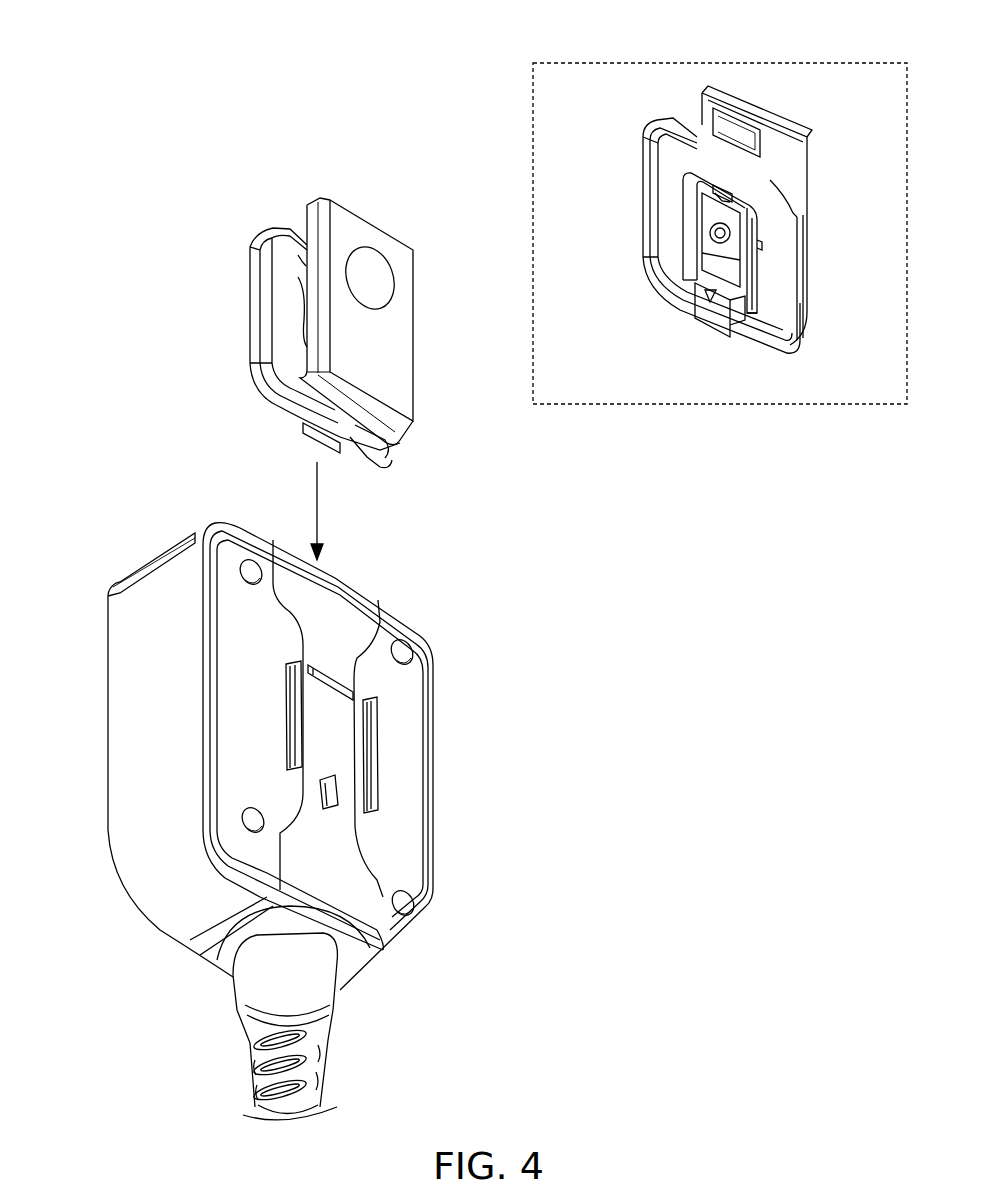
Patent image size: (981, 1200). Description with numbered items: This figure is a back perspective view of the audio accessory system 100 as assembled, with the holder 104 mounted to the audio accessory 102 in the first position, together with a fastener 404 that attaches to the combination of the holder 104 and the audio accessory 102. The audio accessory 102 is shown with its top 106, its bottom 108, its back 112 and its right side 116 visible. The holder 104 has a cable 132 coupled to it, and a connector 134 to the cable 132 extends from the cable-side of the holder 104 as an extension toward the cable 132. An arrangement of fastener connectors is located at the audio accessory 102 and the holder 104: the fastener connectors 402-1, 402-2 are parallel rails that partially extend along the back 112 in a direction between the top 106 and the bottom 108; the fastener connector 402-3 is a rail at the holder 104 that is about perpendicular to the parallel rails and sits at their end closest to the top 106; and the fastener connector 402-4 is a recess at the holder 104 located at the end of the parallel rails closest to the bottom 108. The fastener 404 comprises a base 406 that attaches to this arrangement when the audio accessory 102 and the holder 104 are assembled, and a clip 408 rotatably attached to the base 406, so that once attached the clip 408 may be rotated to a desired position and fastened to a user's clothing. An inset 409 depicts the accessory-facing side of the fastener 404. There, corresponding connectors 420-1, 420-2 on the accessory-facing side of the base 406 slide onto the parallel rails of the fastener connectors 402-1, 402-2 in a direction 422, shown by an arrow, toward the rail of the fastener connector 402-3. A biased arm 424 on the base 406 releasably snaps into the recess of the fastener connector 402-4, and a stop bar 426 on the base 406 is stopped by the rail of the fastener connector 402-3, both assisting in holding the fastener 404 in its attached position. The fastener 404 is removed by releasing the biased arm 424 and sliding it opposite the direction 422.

The audio accessory system 100 is at (150, 213).
The audio accessory 102 is at (428, 631).
The holder 104 is at (351, 988).
The top 106 is at (226, 520).
The bottom 108 is at (190, 935).
The back 112 is at (410, 828).
The right side 116 is at (118, 668).
The cable 132 is at (255, 1090).
The connector 134 is at (243, 1013).
The fastener connector 402-1 is at (287, 726).
The fastener connector 402-2 is at (373, 758).
The fastener connector 402-3 is at (375, 700).
The fastener connector 402-4 is at (320, 790).
The fastener 404 is at (250, 225).
The base 406 is at (258, 313).
The clip 408 is at (414, 323).
The inset 409 is at (533, 134).
The corresponding connector 420-1 is at (750, 283).
The corresponding connector 420-2 is at (683, 243).
The direction 422 is at (316, 497).
The biased arm 424 is at (367, 457).
The stop bar 426 is at (715, 183).